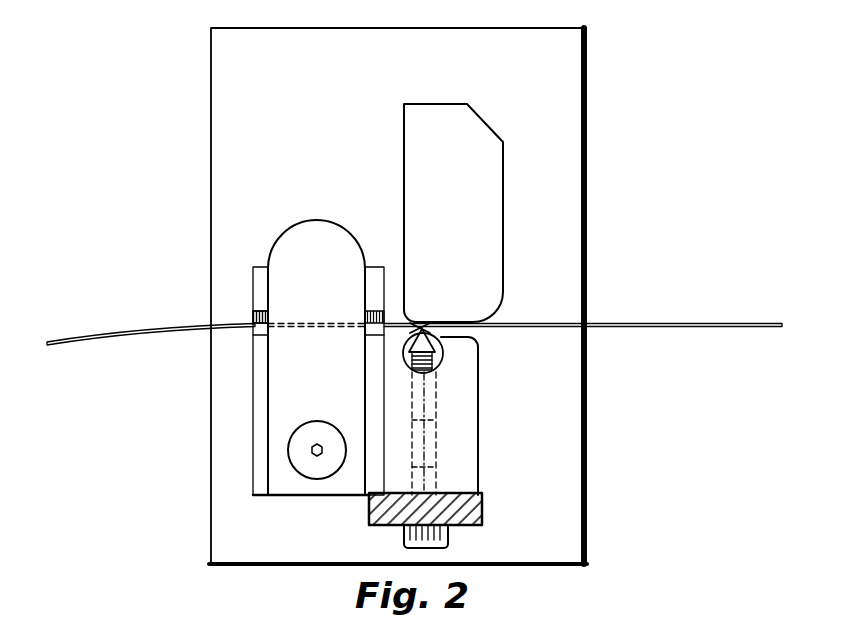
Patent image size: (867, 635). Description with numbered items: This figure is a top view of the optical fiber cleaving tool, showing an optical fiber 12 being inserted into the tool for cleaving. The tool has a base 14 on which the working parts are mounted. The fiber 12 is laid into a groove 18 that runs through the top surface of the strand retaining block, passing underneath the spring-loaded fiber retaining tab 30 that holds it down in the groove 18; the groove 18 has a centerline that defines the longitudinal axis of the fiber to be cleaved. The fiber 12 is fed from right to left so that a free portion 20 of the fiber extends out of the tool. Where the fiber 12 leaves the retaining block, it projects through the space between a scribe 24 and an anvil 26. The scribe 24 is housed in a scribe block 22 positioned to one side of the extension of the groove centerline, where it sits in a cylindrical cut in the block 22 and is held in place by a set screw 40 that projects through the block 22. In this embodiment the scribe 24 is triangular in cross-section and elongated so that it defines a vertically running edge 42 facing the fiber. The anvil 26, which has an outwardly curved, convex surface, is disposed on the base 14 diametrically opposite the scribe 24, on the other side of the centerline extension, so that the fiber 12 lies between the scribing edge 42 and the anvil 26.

The optical fiber 12 is at (178, 330).
The base 14 is at (540, 94).
The groove 18 is at (255, 318).
The free portion 20 is at (667, 323).
The scribe block 22 is at (472, 477).
The scribe 24 is at (436, 350).
The anvil 26 is at (462, 219).
The fiber retaining tab 30 is at (329, 255).
The set screw 40 is at (430, 400).
The vertically running edge 42 is at (418, 325).